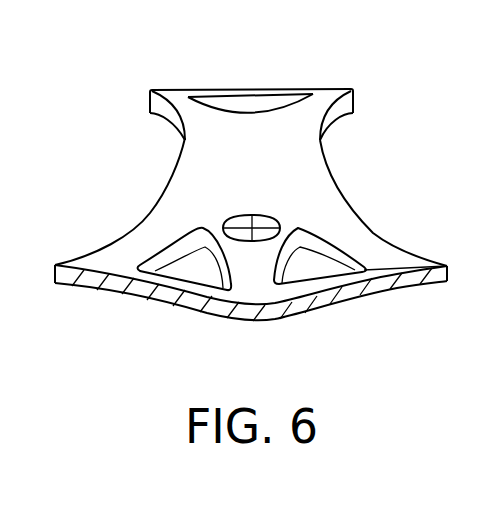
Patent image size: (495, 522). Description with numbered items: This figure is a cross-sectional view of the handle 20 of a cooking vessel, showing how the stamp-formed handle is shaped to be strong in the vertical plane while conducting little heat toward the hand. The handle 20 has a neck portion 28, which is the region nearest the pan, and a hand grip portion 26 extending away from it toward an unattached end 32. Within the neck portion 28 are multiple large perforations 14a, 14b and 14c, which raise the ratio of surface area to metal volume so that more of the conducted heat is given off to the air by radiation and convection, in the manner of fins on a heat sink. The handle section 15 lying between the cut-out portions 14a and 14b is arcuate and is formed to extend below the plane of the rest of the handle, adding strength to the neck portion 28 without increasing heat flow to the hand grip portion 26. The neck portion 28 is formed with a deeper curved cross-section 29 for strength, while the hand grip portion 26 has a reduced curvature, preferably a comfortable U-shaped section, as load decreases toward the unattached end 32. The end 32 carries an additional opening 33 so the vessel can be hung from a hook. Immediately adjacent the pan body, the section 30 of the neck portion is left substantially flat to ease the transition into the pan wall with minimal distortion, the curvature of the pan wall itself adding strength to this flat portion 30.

The perforation 14a is at (204, 266).
The perforation 14b is at (306, 262).
The perforation 14c is at (249, 228).
The handle section 15 is at (252, 278).
The handle 20 is at (168, 186).
The hand grip portion 26 is at (323, 156).
The neck portion 28 is at (408, 262).
The deeper curved cross-section 29 is at (170, 209).
The flat portion 30 is at (120, 267).
The unattached end 32 is at (337, 95).
The opening 33 is at (251, 103).